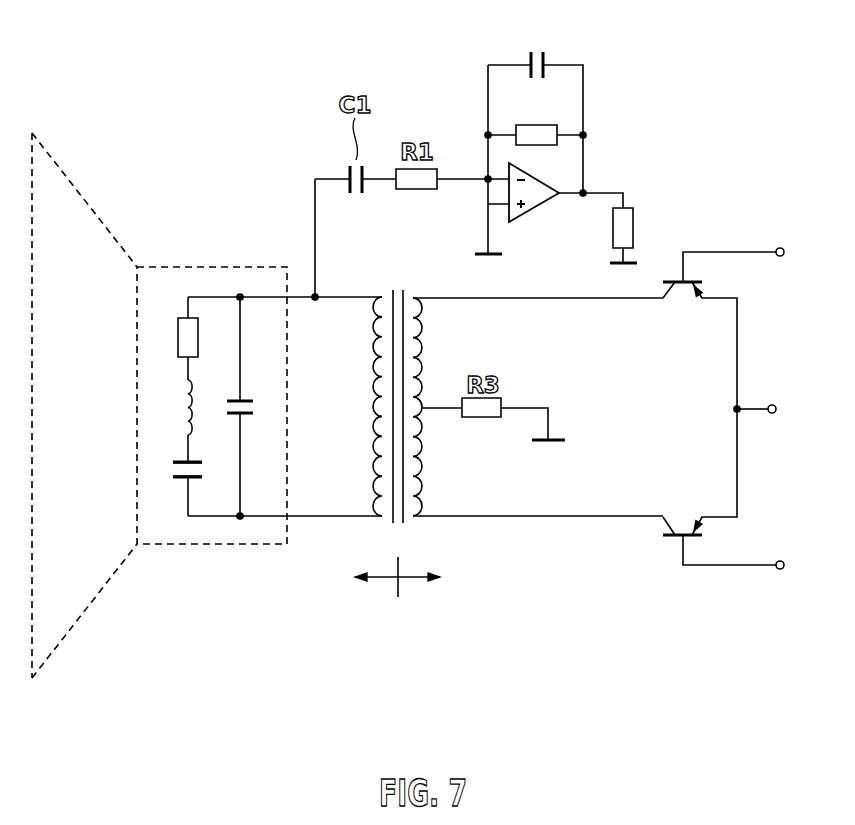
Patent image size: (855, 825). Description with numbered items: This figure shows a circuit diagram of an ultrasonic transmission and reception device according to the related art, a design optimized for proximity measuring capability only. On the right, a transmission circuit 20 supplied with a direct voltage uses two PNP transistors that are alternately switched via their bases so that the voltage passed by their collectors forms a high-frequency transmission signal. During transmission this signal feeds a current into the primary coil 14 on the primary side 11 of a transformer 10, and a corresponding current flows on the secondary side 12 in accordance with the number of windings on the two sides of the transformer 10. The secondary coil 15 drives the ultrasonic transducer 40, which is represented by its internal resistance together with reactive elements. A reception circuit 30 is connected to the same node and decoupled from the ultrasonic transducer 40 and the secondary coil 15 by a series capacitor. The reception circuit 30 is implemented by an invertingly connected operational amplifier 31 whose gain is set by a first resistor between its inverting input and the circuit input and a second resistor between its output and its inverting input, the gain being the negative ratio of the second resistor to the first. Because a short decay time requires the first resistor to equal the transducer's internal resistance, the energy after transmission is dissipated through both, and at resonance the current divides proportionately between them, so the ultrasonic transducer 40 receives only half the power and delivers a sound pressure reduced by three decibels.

The transformer 10 is at (397, 367).
The primary side 11 is at (423, 593).
The secondary side 12 is at (372, 585).
The primary coil 14 is at (422, 497).
The secondary coil 15 is at (377, 497).
The transmission circuit 20 is at (722, 580).
The reception circuit 30 is at (564, 140).
The operational amplifier 31 is at (537, 208).
The ultrasonic transducer 40 is at (213, 232).